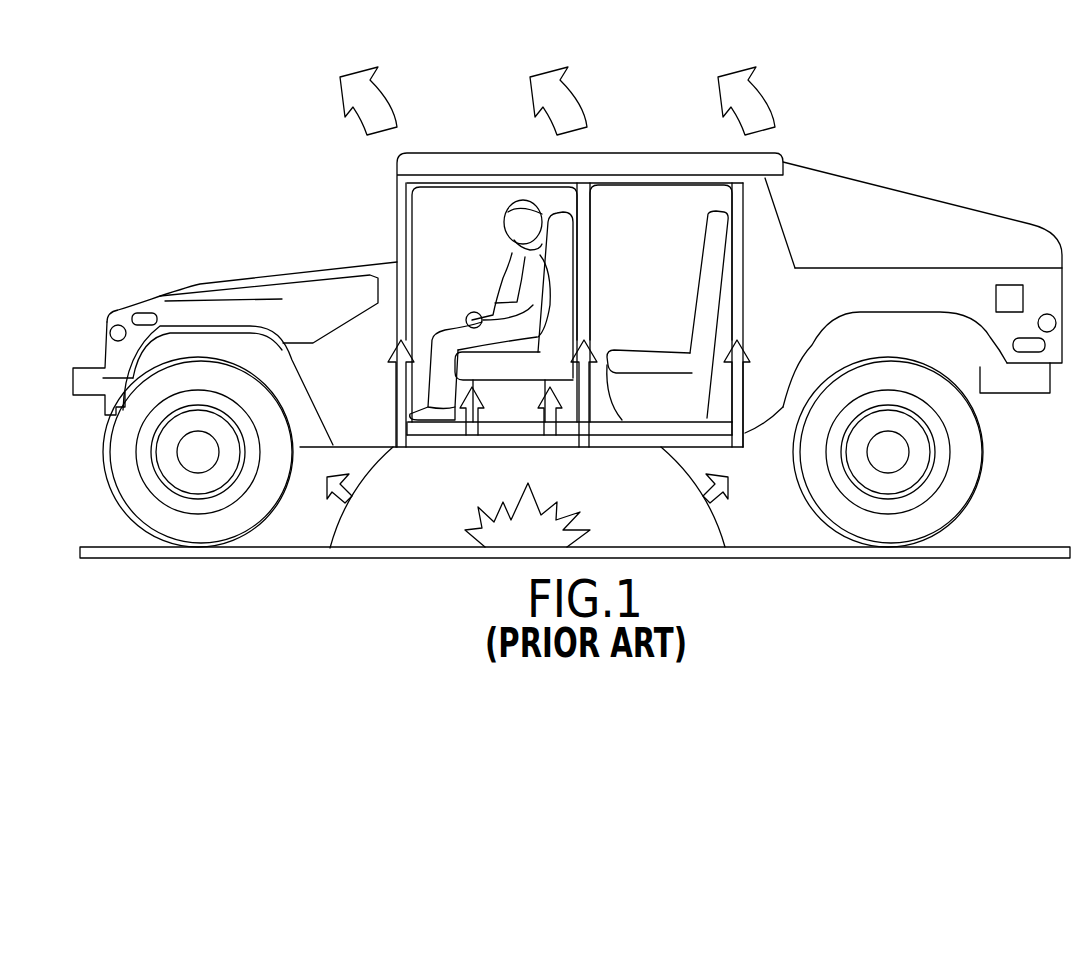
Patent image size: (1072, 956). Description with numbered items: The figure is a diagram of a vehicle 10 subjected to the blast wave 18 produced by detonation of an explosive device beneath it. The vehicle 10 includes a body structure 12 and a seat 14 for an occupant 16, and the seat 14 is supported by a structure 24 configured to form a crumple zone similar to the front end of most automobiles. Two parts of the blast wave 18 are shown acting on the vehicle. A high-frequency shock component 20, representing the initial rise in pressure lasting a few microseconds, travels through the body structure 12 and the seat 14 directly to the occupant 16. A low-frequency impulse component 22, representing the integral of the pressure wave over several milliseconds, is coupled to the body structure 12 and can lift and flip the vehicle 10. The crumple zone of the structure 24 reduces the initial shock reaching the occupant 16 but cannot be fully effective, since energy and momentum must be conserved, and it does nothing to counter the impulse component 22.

The vehicle 10 is at (214, 179).
The body structure 12 is at (396, 226).
The seat 14 is at (571, 283).
The occupant 16 is at (503, 268).
The blast wave 18 is at (710, 530).
The high-frequency shock component 20 is at (583, 403).
The low-frequency impulse component 22 is at (763, 94).
The structure 24 is at (458, 424).